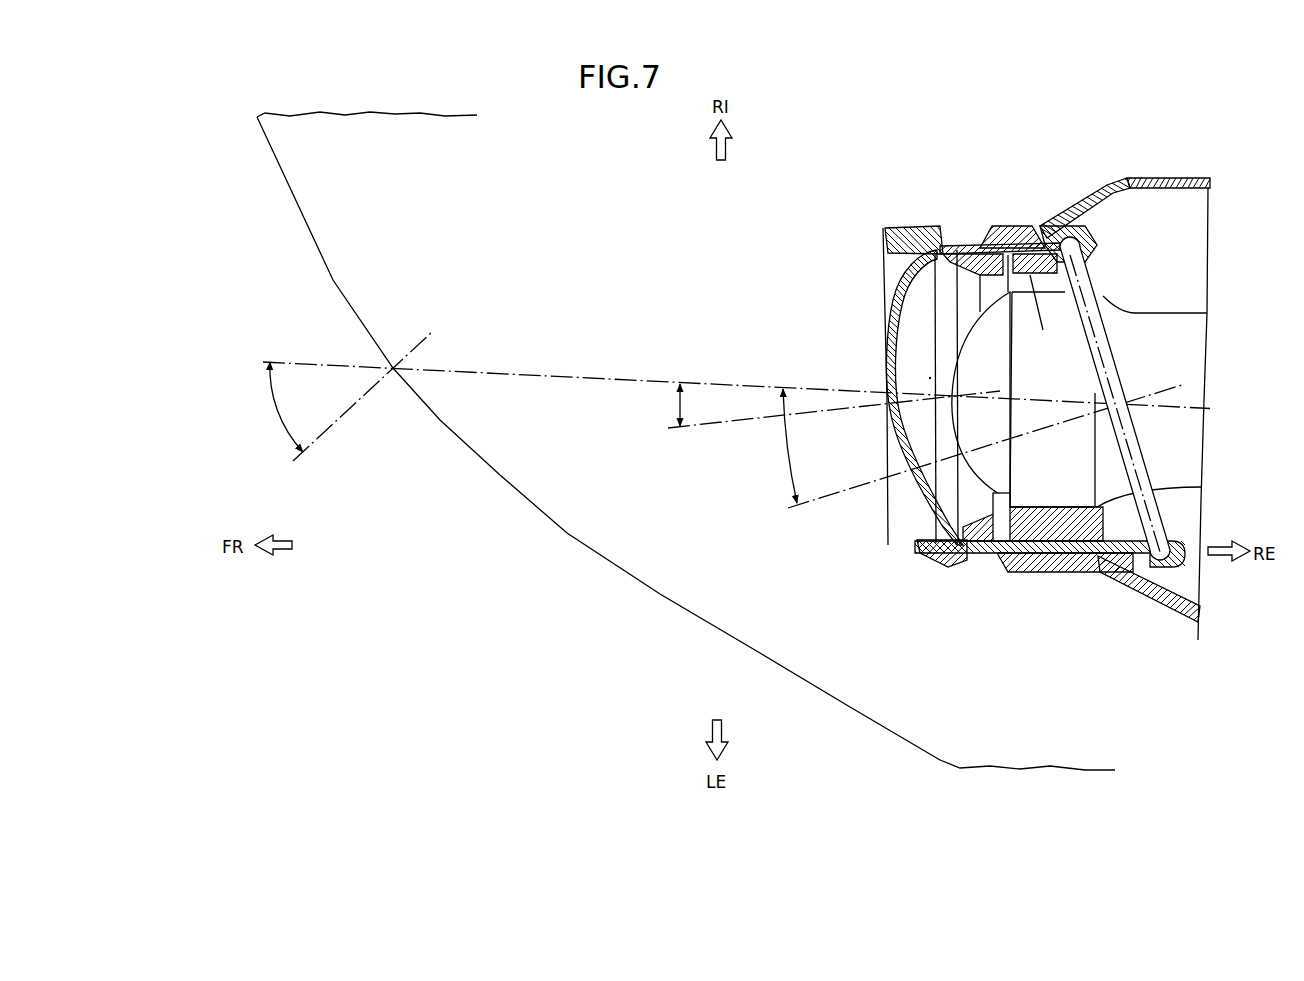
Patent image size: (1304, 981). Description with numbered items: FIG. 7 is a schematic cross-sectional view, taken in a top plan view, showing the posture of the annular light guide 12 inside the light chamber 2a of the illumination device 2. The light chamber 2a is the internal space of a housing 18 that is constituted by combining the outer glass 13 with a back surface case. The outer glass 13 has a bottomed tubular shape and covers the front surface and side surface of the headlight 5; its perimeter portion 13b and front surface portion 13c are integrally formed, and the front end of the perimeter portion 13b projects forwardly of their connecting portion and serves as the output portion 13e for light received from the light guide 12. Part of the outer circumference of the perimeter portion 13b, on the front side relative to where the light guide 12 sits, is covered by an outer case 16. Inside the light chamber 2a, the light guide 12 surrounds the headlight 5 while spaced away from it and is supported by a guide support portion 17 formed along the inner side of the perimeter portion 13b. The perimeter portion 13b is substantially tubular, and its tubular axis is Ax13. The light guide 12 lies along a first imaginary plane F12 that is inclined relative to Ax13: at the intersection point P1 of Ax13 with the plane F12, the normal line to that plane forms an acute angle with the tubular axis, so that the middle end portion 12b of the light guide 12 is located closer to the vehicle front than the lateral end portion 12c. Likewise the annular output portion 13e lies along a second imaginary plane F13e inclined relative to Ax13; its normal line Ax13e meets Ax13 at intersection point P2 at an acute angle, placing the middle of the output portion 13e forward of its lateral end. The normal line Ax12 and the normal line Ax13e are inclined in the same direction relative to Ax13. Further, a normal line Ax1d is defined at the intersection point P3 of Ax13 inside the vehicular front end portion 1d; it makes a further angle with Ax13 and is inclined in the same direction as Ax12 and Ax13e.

The vehicular front end portion 1d is at (565, 540).
The illumination device 2 is at (1033, 175).
The light chamber 2a is at (908, 420).
The headlight 5 is at (993, 230).
The light guide 12 is at (1087, 280).
The middle end portion 12b is at (1065, 210).
The lateral end portion 12c is at (1140, 573).
The outer glass 13 is at (966, 637).
The perimeter portion 13b is at (983, 550).
The front surface portion 13c is at (893, 457).
The output portion 13e is at (887, 242).
The outer case 16 is at (912, 225).
The guide support portion 17 is at (1093, 237).
The housing 18 is at (1190, 172).
The intersection point P1 is at (1128, 399).
The intersection point P2 is at (929, 375).
The intersection point P3 is at (399, 362).
The first imaginary plane F12 is at (1142, 440).
The second imaginary plane F13e is at (915, 350).
The normal line Ax12 is at (812, 503).
The tubular axis Ax13 is at (600, 381).
The normal line Ax13e is at (732, 424).
The normal line Ax1d is at (329, 436).